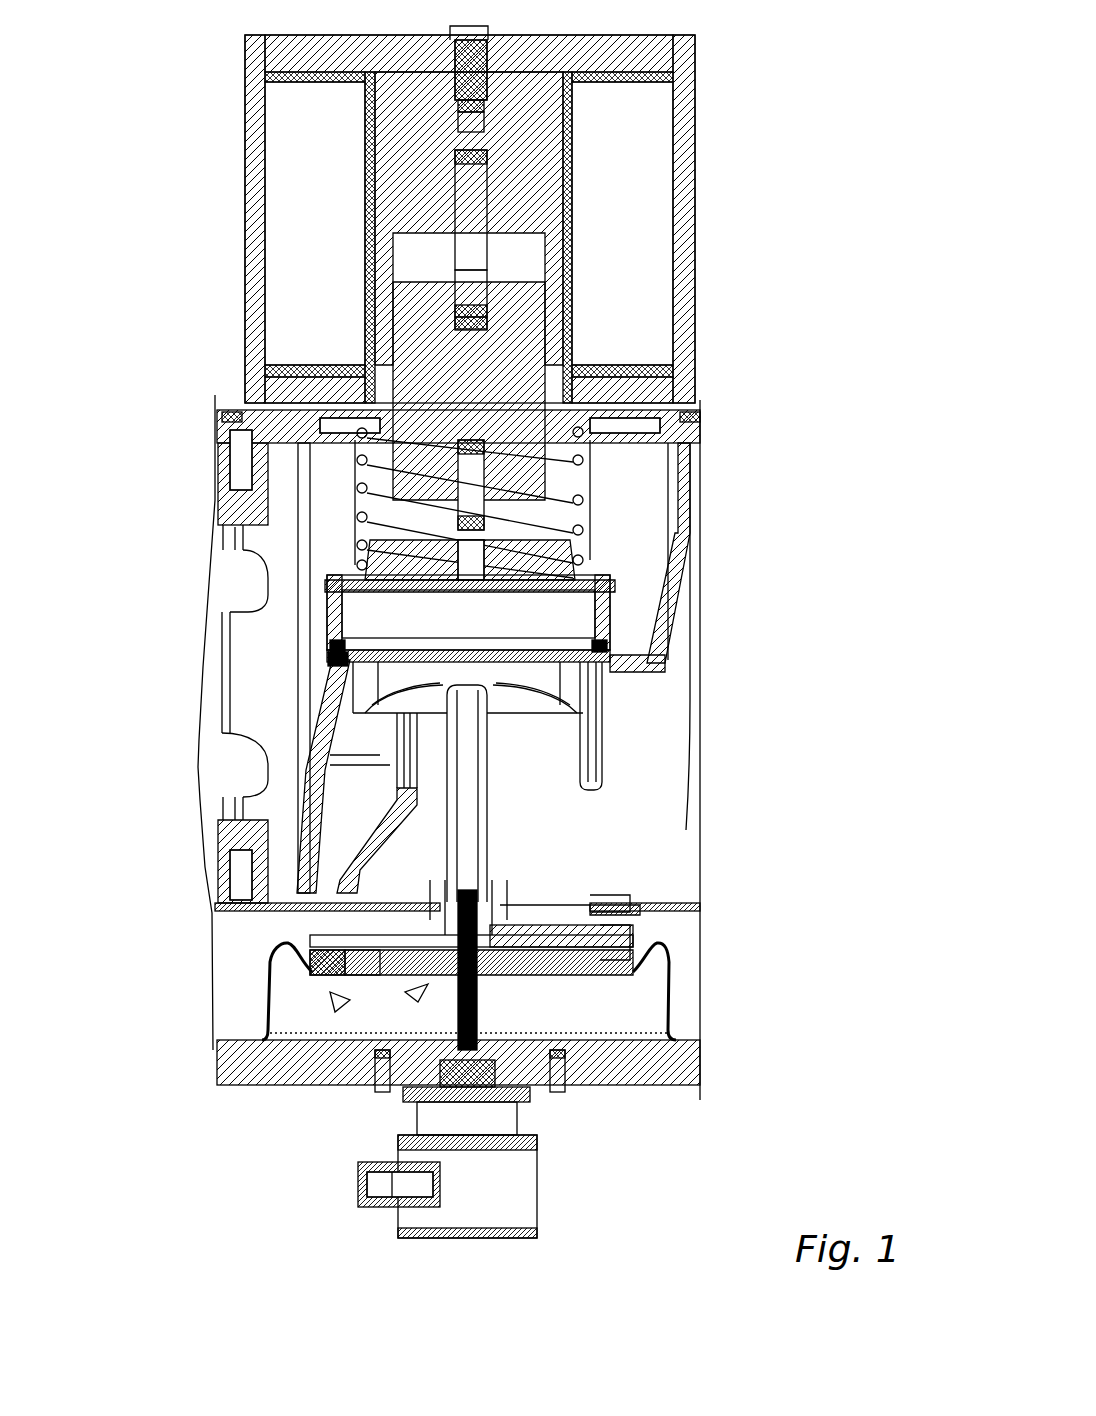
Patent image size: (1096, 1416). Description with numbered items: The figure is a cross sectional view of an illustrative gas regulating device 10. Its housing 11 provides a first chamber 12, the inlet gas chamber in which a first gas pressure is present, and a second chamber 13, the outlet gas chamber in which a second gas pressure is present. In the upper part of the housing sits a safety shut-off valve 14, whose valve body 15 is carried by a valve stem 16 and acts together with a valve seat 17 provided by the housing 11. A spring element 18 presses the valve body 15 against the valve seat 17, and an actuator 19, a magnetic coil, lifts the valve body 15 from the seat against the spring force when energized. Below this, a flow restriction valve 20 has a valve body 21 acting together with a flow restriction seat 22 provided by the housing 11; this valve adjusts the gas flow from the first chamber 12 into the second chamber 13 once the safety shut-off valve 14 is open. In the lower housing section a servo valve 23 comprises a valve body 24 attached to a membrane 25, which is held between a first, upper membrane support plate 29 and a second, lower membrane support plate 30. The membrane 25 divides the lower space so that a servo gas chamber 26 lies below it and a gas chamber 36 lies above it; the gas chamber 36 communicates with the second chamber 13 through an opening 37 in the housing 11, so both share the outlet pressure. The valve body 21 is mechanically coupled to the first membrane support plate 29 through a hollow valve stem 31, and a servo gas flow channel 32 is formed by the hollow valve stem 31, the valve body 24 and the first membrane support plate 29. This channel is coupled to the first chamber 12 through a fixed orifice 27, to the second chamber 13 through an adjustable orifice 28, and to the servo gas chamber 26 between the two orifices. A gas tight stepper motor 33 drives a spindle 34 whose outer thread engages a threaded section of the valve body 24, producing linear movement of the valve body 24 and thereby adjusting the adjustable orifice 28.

The gas regulating device 10 is at (745, 60).
The housing 11 is at (272, 452).
The first chamber 12 is at (305, 540).
The second chamber 13 is at (625, 780).
The safety shut-off valve 14 is at (808, 110).
The valve body 15 is at (565, 558).
The valve stem 16 is at (468, 362).
The valve seat 17 is at (353, 662).
The spring element 18 is at (582, 500).
The actuator 19 is at (638, 210).
The flow restriction valve 20 is at (573, 720).
The valve body 21 is at (398, 740).
The flow restriction seat 22 is at (597, 713).
The servo valve 23 is at (418, 998).
The valve body 24 is at (566, 1090).
The membrane 25 is at (670, 993).
The servo gas chamber 26 is at (600, 1000).
The fixed orifice 27 is at (470, 665).
The adjustable orifice 28 is at (648, 965).
The first membrane support plate 29 is at (568, 905).
The second membrane support plate 30 is at (340, 972).
The hollow valve stem 31 is at (450, 820).
The servo gas flow channel 32 is at (267, 973).
The stepper motor 33 is at (490, 1200).
The spindle 34 is at (415, 1058).
The gas chamber 36 is at (292, 948).
The opening 37 is at (630, 908).